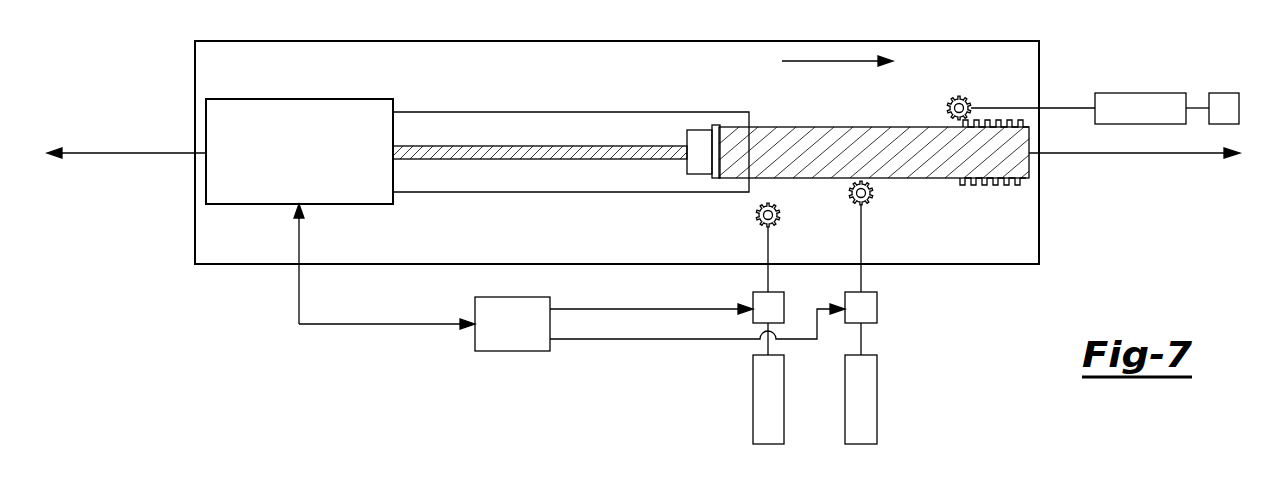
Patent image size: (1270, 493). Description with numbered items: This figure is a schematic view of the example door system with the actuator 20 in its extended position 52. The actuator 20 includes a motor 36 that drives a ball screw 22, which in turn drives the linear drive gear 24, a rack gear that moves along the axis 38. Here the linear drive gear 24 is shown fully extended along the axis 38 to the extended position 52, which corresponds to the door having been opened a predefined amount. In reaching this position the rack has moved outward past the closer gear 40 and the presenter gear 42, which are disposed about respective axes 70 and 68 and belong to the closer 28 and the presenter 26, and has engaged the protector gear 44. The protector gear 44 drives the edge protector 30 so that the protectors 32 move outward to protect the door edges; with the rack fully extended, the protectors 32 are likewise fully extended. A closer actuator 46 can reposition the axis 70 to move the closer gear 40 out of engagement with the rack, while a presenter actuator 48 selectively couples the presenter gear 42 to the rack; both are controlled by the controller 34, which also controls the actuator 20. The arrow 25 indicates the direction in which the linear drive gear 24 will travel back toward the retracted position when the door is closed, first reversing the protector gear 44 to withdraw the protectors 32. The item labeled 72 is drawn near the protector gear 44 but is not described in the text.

The actuator 20 is at (228, 64).
The ball screw 22 is at (435, 153).
The linear drive gear 24 is at (878, 165).
The arrow 25 is at (838, 60).
The presenter 26 is at (878, 403).
The closer 28 is at (755, 403).
The edge protector 30 is at (1140, 105).
The protectors 32 is at (1225, 105).
The controller 34 is at (523, 336).
The motor 36 is at (307, 164).
The axis 38 is at (1069, 154).
The closer gear 40 is at (770, 232).
The presenter gear 42 is at (861, 209).
The protector gear 44 is at (958, 95).
The closer actuator 46 is at (754, 301).
The presenter actuator 48 is at (878, 311).
The extended position 52 is at (776, 106).
The axis 68 is at (848, 192).
The axis 70 is at (755, 215).
The gear shaft 72 is at (952, 103).